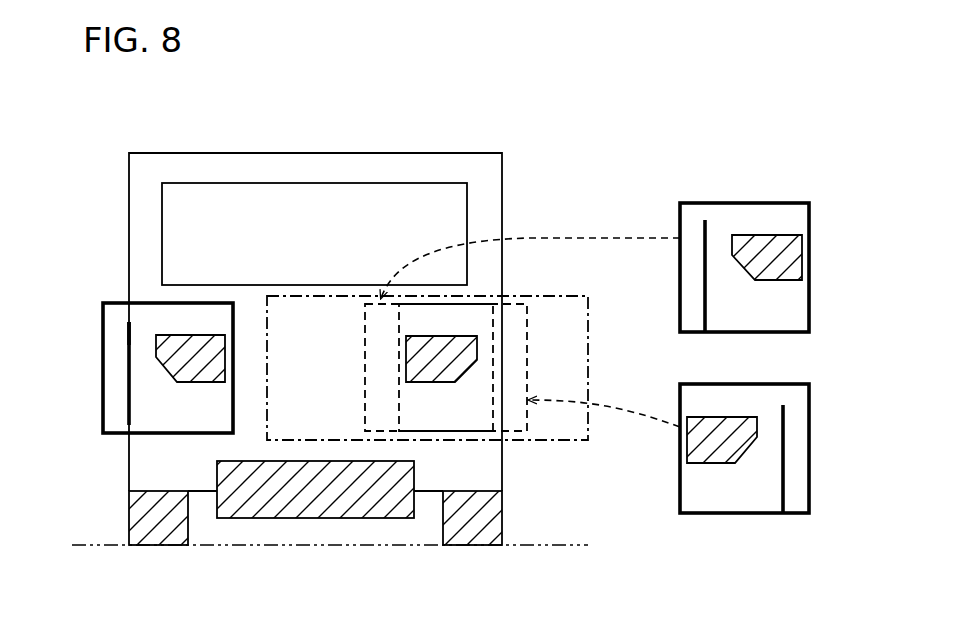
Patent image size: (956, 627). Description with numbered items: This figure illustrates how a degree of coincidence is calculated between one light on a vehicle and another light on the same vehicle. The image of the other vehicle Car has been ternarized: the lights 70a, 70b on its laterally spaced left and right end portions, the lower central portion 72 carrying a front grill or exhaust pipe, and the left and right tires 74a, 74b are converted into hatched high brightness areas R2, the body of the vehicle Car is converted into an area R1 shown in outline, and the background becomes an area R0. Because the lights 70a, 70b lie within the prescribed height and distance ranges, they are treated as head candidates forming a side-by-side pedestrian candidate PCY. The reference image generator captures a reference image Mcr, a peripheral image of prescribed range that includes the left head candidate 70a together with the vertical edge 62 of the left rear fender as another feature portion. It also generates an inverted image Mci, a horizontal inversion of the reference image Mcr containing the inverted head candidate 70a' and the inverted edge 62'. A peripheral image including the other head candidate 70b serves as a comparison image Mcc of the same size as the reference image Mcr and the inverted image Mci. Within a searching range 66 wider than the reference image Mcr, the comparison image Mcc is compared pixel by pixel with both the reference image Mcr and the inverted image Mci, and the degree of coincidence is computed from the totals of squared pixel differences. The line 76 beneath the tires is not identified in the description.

The other vehicle Car is at (161, 152).
The side-by-side pedestrian candidate PCY is at (444, 146).
The reference image Mcr is at (118, 303).
The area R1 is at (127, 339).
The vertical edge 62 is at (384, 322).
The high brightness area R2 is at (178, 343).
The light 70a is at (479, 308).
The searching range 66 is at (295, 297).
The comparison image Mcc is at (375, 321).
The light 70b is at (420, 336).
The inverted image Mci is at (527, 363).
The head candidate 70a' is at (728, 426).
The edge 62' is at (748, 459).
The area R0 is at (97, 473).
The left tire 74a is at (146, 518).
The lower central portion 72 is at (337, 512).
The right tire 74b is at (488, 516).
The rail line 76 is at (513, 545).